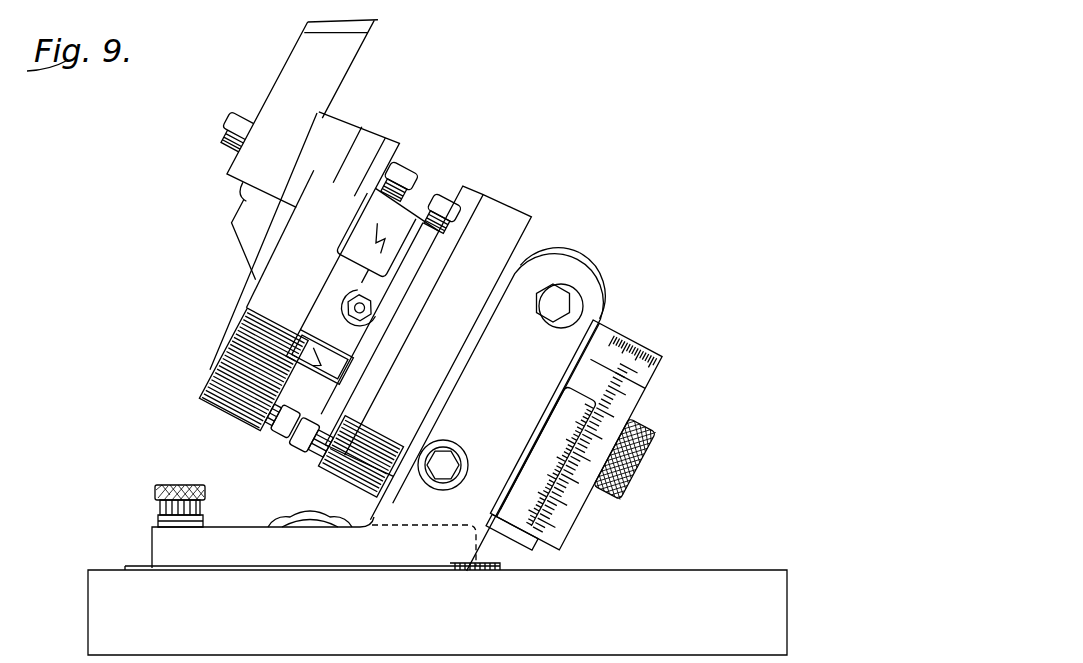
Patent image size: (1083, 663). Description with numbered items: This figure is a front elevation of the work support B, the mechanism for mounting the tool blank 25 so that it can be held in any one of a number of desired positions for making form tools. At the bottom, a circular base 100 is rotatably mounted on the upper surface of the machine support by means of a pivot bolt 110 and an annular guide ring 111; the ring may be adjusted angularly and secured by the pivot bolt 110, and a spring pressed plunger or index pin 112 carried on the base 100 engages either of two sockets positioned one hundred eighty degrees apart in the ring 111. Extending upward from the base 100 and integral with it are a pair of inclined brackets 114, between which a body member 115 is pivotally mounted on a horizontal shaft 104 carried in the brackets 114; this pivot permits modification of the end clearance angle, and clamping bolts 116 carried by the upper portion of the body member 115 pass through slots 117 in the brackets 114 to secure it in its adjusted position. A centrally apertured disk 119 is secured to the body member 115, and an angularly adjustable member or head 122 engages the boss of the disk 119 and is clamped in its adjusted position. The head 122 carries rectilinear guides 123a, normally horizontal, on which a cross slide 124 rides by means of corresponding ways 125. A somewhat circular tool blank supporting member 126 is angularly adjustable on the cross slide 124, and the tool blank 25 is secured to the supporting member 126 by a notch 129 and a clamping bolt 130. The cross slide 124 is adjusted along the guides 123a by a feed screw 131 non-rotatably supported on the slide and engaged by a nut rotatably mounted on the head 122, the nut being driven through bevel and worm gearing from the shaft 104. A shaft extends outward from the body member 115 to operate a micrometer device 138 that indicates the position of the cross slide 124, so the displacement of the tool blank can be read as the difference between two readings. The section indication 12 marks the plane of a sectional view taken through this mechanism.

The tool blank 25 is at (288, 61).
The clamping bolt 130 is at (234, 124).
The notch 129 is at (250, 198).
The tool blank supporting member 126 is at (267, 293).
The cross slide 124 is at (300, 333).
The rectilinear guides 123a is at (405, 195).
The ways 125 is at (327, 363).
The feed screw 131 is at (372, 307).
The angularly adjustable member (head) 122 is at (478, 187).
The centrally apertured disk 119 is at (523, 218).
The body member 115 is at (520, 265).
The slots 117 is at (548, 290).
The clamping bolts 116 is at (572, 295).
The inclined brackets 114 is at (585, 302).
The micrometer device 138 is at (637, 339).
The horizontal shaft 104 is at (449, 465).
The section line 12 is at (198, 215).
The work support B is at (385, 108).
The circular base 100 is at (250, 535).
The pivot bolt 110 is at (312, 518).
The spring pressed plunger or index pin 112 is at (178, 484).
The annular guide ring 111 is at (125, 568).